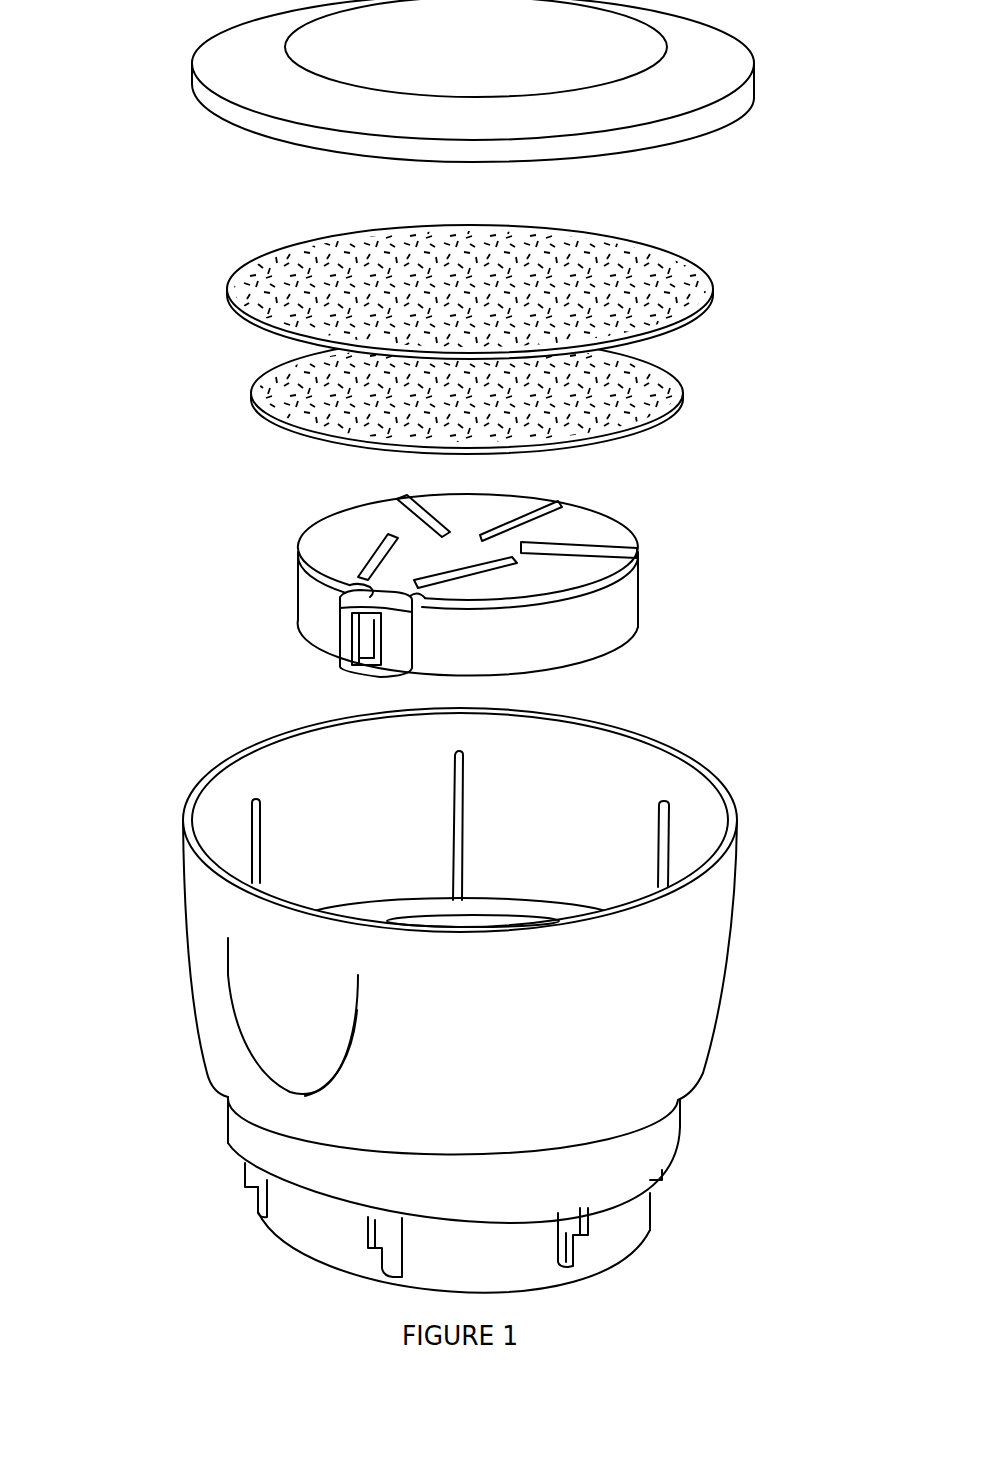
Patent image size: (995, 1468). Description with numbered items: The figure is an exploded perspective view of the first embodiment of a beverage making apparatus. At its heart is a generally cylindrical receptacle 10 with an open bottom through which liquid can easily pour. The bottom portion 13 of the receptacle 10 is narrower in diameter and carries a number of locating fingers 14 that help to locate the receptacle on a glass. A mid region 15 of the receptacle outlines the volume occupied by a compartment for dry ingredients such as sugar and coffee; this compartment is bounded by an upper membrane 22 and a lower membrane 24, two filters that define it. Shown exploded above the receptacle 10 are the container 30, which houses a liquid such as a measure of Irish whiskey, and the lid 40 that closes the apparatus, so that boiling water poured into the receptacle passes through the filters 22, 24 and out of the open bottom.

The receptacle 10 is at (733, 952).
The bottom portion 13 is at (655, 1222).
The locating fingers 14 is at (245, 1186).
The mid region 15 is at (680, 1125).
The upper membrane 22 is at (703, 278).
The lower membrane 24 is at (682, 398).
The container 30 is at (633, 613).
The lid 40 is at (755, 73).